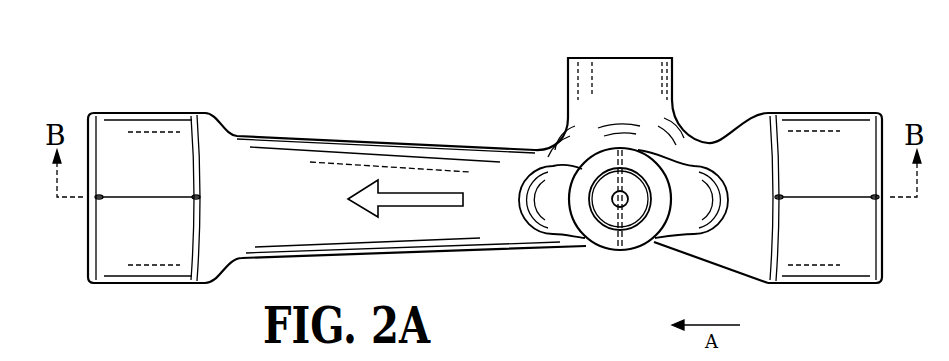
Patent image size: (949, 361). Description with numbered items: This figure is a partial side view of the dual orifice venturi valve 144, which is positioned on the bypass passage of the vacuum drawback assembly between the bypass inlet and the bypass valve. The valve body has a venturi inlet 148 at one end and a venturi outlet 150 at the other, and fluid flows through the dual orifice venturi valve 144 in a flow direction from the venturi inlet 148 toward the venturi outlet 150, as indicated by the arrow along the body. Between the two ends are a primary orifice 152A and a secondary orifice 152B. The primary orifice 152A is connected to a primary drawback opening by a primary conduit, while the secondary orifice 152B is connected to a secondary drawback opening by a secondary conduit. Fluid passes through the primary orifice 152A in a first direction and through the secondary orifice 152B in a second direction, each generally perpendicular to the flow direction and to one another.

The dual orifice venturi valve 144 is at (323, 104).
The venturi outlet 150 is at (88, 266).
The venturi inlet 148 is at (884, 263).
The primary orifice 152A is at (664, 56).
The secondary orifice 152B is at (627, 202).